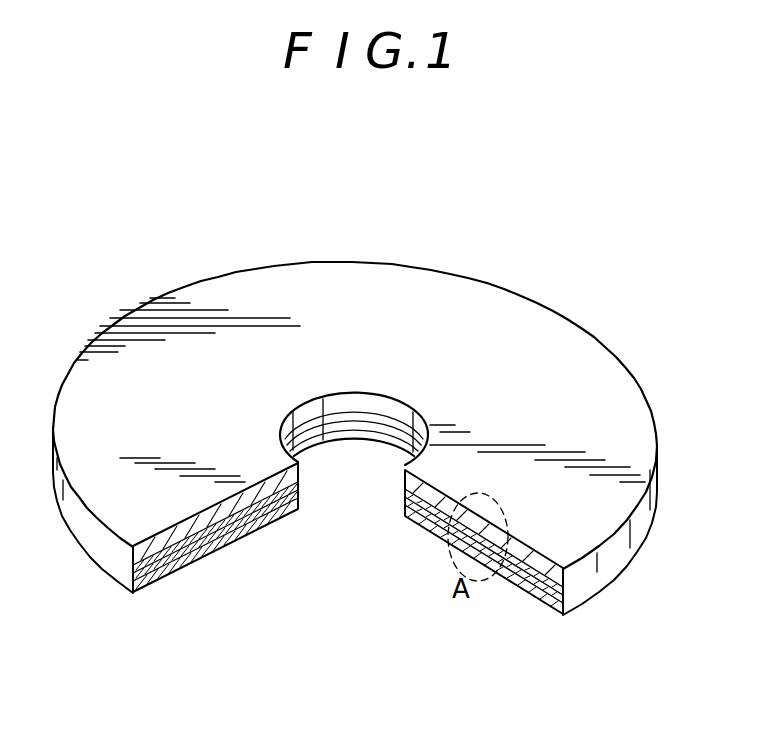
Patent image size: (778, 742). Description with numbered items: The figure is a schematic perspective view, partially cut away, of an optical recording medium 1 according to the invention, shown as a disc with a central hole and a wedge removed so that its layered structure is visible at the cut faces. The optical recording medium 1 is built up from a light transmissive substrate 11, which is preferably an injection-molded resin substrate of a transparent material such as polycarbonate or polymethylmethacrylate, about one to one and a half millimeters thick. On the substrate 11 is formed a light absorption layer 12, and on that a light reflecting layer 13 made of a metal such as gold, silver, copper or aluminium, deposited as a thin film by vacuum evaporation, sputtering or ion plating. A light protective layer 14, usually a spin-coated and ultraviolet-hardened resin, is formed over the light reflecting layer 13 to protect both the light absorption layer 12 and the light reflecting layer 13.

The optical recording medium 1 is at (518, 257).
The light transmissive substrate 11 is at (583, 343).
The light absorption layer 12 is at (252, 518).
The light reflecting layer 13 is at (285, 494).
The light protective layer 14 is at (227, 543).